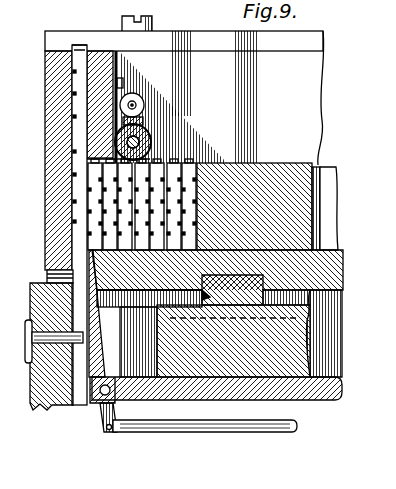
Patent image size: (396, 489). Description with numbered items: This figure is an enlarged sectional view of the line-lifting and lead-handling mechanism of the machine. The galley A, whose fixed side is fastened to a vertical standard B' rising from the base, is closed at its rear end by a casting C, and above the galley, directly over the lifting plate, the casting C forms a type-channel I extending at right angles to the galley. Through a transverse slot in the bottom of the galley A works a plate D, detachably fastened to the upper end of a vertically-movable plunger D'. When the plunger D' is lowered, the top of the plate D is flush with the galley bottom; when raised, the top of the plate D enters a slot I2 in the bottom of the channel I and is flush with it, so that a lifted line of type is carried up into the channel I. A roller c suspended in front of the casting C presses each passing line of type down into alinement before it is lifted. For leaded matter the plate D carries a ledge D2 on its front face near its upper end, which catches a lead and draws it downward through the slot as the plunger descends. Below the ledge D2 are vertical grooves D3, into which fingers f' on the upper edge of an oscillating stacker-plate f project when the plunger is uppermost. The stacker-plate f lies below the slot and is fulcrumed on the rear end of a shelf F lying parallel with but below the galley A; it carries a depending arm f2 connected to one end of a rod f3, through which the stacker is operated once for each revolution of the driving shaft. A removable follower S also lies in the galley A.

The type-channel I is at (86, 48).
The slot I2 is at (72, 119).
The standard B' is at (184, 87).
The casting C is at (45, 83).
The roller c is at (141, 126).
The plate D is at (103, 204).
The ledge D2 is at (88, 167).
The vertical grooves D3 is at (86, 233).
The plunger D' is at (54, 352).
The follower S is at (318, 170).
The galley A is at (348, 292).
The shelf F is at (341, 379).
The stacker-plate f is at (98, 313).
The fingers f' is at (98, 320).
The depending arm f2 is at (128, 440).
The rod f3 is at (256, 432).